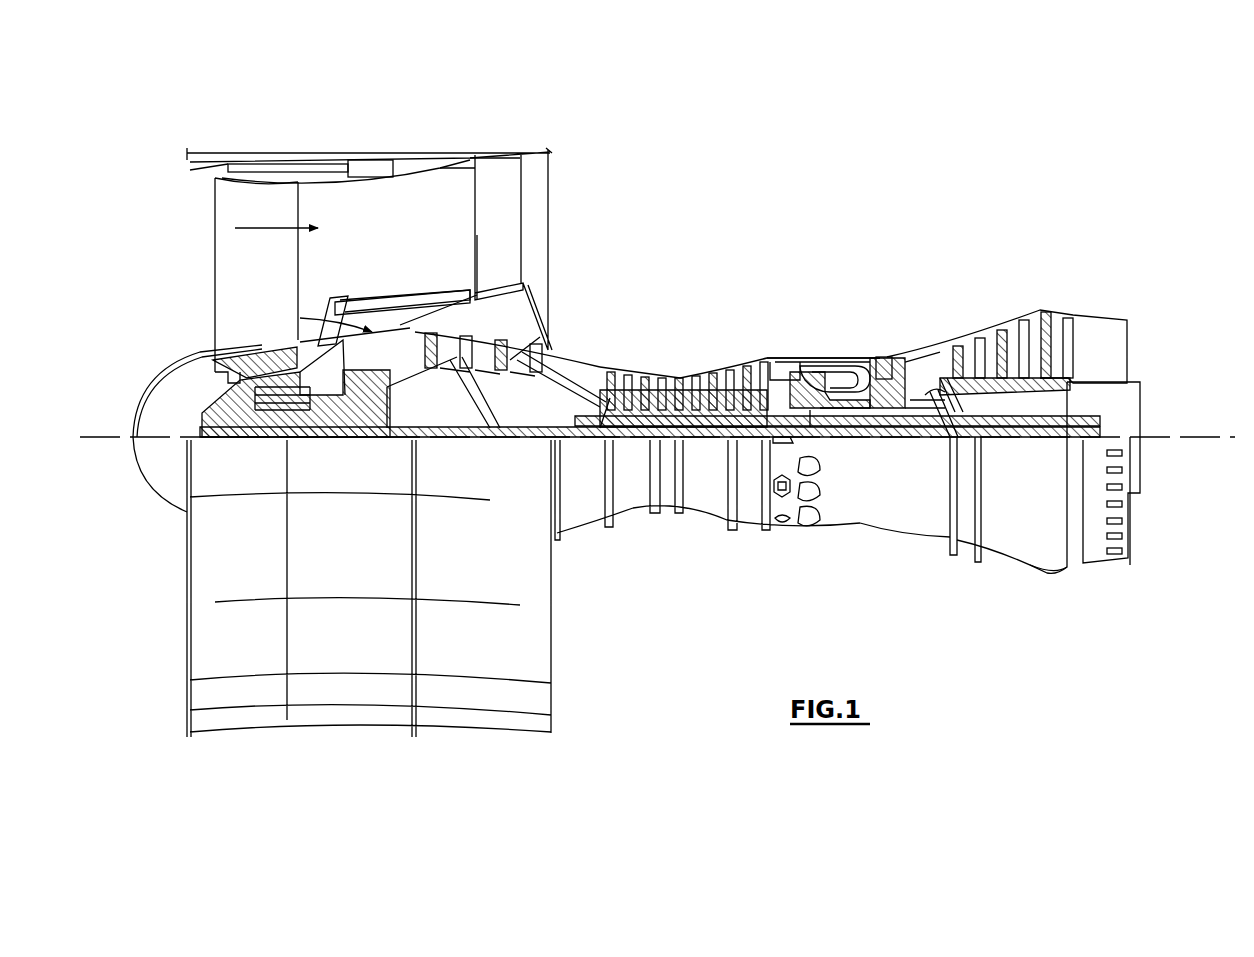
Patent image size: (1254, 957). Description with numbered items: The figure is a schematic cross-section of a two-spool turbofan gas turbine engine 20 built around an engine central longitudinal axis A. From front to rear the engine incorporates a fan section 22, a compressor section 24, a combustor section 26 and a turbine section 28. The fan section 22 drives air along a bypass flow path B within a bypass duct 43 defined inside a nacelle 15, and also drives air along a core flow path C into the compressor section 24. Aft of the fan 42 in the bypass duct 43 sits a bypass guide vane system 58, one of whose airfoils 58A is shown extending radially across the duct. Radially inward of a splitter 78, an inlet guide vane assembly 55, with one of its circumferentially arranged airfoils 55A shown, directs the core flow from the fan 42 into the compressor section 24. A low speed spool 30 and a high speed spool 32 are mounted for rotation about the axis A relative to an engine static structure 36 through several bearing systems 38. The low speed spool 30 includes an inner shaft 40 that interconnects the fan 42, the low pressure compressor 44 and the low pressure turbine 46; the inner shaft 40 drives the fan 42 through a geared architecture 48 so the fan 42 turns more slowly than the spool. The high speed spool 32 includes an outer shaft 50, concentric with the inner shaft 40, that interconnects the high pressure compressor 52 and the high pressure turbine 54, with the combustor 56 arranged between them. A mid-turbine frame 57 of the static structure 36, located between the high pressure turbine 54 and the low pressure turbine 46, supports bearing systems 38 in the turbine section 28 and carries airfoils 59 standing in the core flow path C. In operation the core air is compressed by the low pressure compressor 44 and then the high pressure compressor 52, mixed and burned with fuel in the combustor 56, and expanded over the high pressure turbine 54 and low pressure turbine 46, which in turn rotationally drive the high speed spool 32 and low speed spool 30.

The nacelle 15 is at (372, 156).
The gas turbine engine 20 is at (832, 197).
The fan section 22 is at (300, 142).
The compressor section 24 is at (602, 346).
The combustor section 26 is at (825, 325).
The turbine section 28 is at (972, 296).
The low speed spool 30 is at (708, 448).
The high speed spool 32 is at (745, 408).
The engine static structure 36 is at (748, 530).
The bearing systems 38 is at (932, 442).
The inner shaft 40 is at (565, 445).
The fan 42 is at (272, 282).
The bypass duct 43 is at (440, 170).
The low pressure compressor 44 is at (475, 352).
The low pressure turbine 46 is at (1017, 330).
The geared architecture 48 is at (377, 437).
The outer shaft 50 is at (825, 413).
The high pressure compressor 52 is at (683, 408).
The high pressure turbine 54 is at (888, 357).
The inlet guide vane assembly 55 is at (318, 300).
The airfoils 55A is at (345, 340).
The combustor 56 is at (820, 380).
The mid-turbine frame 57 is at (932, 347).
The bypass guide vane system 58 is at (530, 200).
The airfoils 58A is at (526, 249).
The airfoils 59 is at (955, 398).
The splitter 78 is at (342, 318).
The engine central longitudinal axis A is at (1220, 437).
The bypass flow path B is at (275, 222).
The core flow path C is at (300, 318).